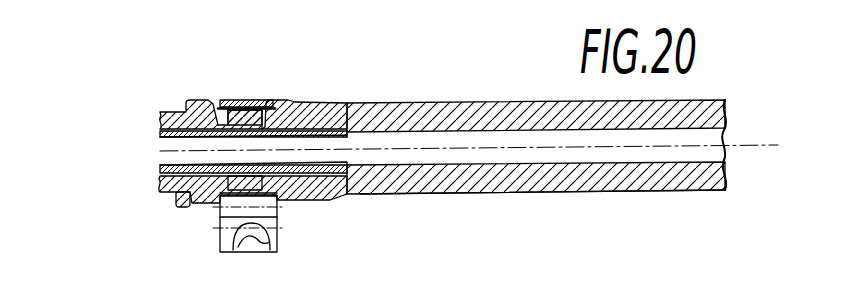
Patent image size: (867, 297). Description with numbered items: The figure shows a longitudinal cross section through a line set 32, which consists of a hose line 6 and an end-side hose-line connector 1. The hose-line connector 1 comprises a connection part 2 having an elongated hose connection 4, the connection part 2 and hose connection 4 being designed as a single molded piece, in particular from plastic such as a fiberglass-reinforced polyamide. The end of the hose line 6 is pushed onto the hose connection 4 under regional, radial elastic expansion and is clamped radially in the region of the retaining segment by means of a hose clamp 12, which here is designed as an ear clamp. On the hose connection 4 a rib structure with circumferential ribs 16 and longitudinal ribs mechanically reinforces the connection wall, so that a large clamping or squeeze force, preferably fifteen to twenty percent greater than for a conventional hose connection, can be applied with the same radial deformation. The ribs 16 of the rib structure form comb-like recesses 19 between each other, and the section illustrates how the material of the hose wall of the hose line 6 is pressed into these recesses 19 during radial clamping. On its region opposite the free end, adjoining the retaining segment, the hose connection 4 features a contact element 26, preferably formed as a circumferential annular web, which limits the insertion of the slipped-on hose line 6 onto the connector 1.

The hose-line connector 1 is at (158, 204).
The connection part 2 is at (182, 130).
The hose connection 4 is at (287, 128).
The hose line 6 is at (477, 117).
The hose clamp 12 is at (252, 100).
The circumferential ribs 16 is at (233, 177).
The comb-like recesses 19 is at (252, 125).
The contact element 26 is at (186, 207).
The line set 32 is at (400, 207).